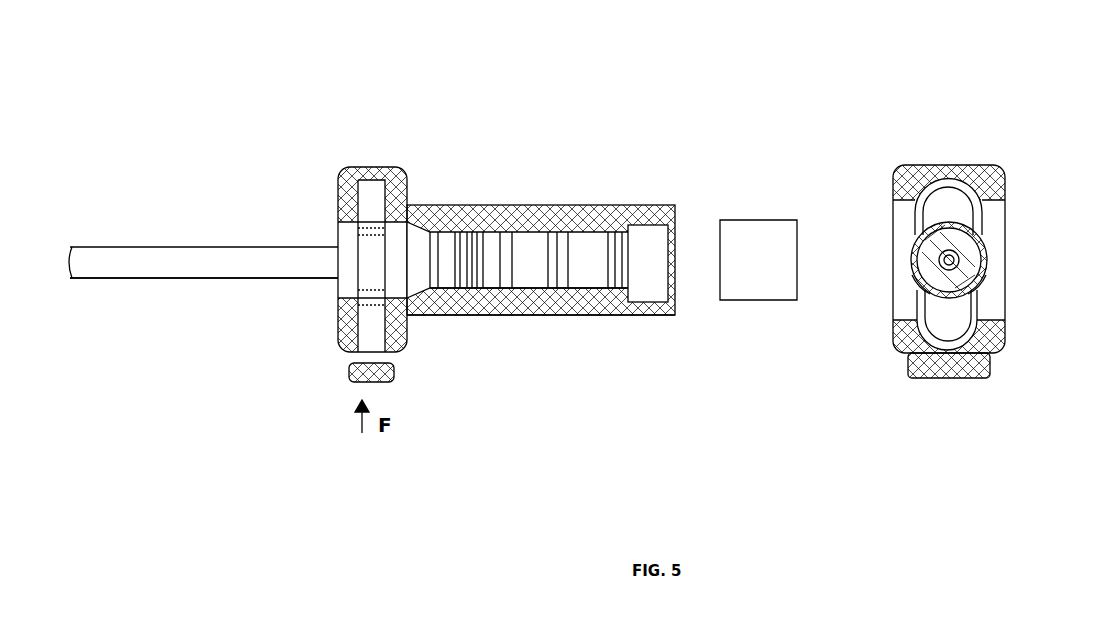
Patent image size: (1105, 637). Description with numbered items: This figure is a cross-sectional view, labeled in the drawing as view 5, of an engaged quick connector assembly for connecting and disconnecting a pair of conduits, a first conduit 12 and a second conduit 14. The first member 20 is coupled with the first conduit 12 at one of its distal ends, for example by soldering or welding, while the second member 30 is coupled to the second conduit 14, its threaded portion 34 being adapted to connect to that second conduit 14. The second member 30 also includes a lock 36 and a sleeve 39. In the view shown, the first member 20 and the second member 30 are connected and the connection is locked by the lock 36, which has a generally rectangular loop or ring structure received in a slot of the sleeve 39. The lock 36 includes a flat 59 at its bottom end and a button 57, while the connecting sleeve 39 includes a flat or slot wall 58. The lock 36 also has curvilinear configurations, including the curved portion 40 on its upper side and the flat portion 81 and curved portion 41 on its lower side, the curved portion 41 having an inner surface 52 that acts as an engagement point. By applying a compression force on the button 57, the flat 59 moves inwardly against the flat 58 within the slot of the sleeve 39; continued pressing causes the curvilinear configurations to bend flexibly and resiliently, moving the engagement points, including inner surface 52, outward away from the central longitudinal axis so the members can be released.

The first conduit 12 is at (160, 247).
The first member 20 is at (290, 278).
The button 57 is at (350, 380).
The lock 36 is at (380, 372).
The second member 30 is at (527, 210).
The threaded portion 34 is at (646, 216).
The sleeve 39 is at (593, 318).
The second conduit 14 is at (748, 285).
The inner surface 52 is at (913, 253).
The flat 59 is at (932, 175).
The slot wall 58 is at (952, 175).
The flat portion 81 is at (962, 190).
The end view body 5 is at (990, 253).
The curved portion 41 is at (912, 272).
The curved portion 40 is at (987, 273).